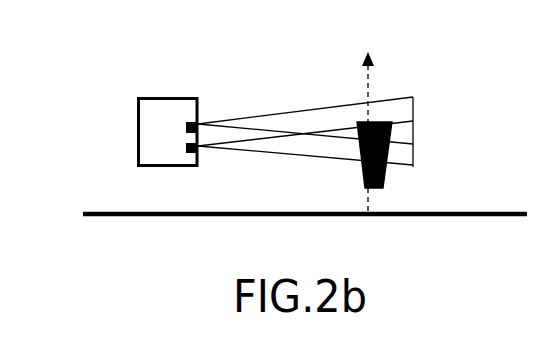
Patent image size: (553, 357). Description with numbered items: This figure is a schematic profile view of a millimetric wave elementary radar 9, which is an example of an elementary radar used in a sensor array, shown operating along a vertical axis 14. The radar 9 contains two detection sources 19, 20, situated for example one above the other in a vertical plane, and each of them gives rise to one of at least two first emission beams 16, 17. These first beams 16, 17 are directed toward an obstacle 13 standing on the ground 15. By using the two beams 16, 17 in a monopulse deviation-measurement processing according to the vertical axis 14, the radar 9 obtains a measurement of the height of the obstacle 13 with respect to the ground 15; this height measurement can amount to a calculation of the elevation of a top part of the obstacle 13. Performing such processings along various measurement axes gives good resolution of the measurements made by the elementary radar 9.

The elementary radar 9 is at (165, 97).
The detection source 19 is at (188, 122).
The detection source 20 is at (192, 166).
The first emission beam 17 is at (305, 110).
The first emission beam 16 is at (292, 155).
The vertical axis 14 is at (375, 62).
The obstacle 13 is at (414, 156).
The ground 15 is at (83, 212).